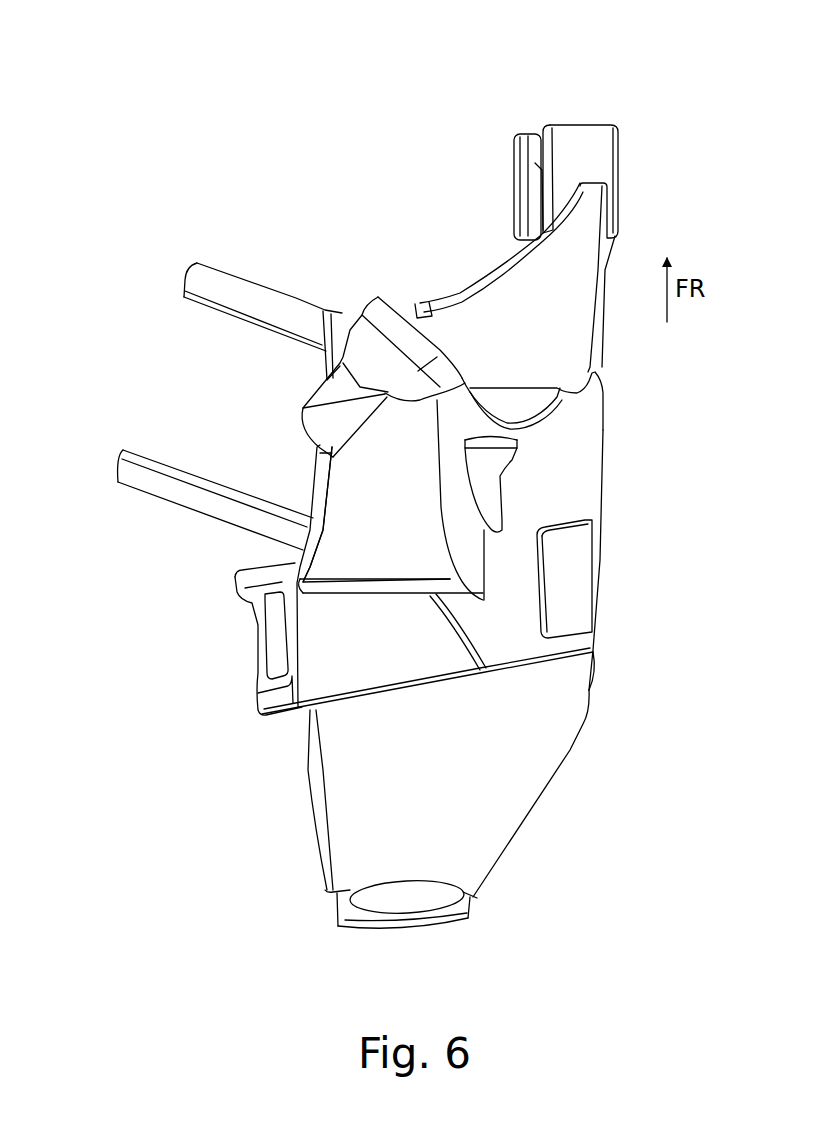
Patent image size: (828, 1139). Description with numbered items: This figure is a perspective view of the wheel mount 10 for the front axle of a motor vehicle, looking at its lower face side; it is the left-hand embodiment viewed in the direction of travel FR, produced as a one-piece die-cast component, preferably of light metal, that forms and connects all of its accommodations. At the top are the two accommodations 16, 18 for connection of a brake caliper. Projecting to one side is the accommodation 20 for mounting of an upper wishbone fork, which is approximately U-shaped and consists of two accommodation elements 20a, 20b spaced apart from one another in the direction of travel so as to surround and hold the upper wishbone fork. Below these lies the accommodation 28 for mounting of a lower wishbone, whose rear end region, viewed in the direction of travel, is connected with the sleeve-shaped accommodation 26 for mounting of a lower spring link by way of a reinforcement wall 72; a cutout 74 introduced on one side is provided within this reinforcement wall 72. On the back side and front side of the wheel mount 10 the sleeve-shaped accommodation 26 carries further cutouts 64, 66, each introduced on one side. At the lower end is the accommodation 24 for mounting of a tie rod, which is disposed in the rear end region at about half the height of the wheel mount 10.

The wheel mount 10 is at (490, 100).
The accommodation for connection of a brake caliper 16 is at (505, 195).
The accommodation for connection of a brake caliper 18 is at (628, 164).
The accommodation for mounting of an upper wishbone fork 20 is at (116, 320).
The accommodation element 20a is at (217, 287).
The accommodation element 20b is at (152, 498).
The accommodation for mounting of a tie rod 24 is at (405, 937).
The accommodation for mounting of a lower spring link 26 is at (279, 722).
The accommodation for mounting of a lower wishbone 28 is at (410, 300).
The cutout 64 is at (578, 586).
The cutout 66 is at (270, 630).
The reinforcement wall 72 is at (360, 498).
The cutout 74 is at (480, 470).